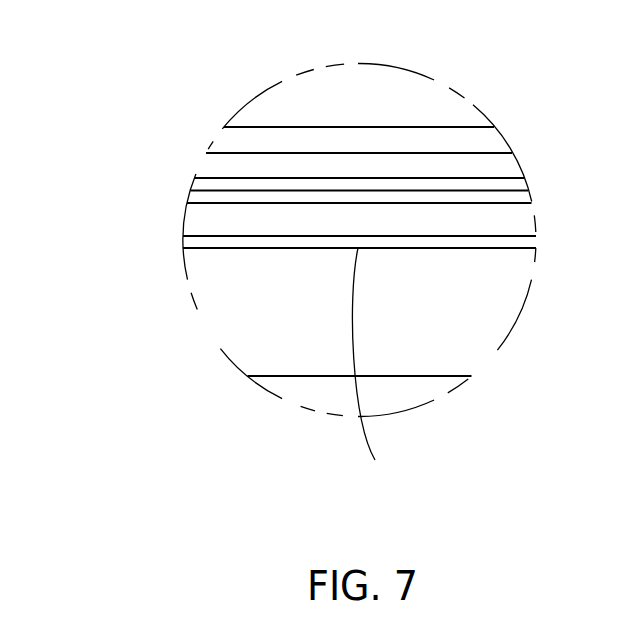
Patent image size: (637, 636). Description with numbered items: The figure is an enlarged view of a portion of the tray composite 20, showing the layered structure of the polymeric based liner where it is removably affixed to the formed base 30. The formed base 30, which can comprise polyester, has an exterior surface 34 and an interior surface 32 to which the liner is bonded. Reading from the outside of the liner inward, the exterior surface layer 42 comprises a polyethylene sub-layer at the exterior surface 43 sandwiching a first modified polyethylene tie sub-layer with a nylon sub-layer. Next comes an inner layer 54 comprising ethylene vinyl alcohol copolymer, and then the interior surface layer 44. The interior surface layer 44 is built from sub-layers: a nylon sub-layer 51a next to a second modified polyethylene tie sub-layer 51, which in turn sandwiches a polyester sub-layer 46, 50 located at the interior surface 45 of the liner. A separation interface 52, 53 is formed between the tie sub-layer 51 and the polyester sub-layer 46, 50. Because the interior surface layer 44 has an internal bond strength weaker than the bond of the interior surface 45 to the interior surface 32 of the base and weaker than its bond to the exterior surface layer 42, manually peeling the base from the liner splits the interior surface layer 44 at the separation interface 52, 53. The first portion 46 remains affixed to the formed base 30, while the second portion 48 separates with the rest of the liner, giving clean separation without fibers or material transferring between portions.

The tray composite 20 is at (452, 422).
The formed base 30 is at (458, 335).
The interior surface of the formed base 32 is at (447, 248).
The exterior surface of the formed base 34 is at (307, 377).
The exterior surface layer 42 is at (257, 138).
The exterior surface 43 is at (393, 127).
The interior surface layer 44 is at (544, 180).
The interior surface of the polymeric based liner 45 is at (373, 371).
The first portion of the interior surface layer 46 is at (288, 242).
The second portion of the interior surface layer 48 is at (180, 178).
The polyester sub-layer 50 is at (119, 335).
The second modified polyethylene tie sub-layer 51 is at (235, 197).
The nylon sub-layer 51a is at (487, 188).
The separation interface 52 is at (222, 233).
The separation interface 53 is at (222, 205).
The inner layer 54 is at (428, 160).